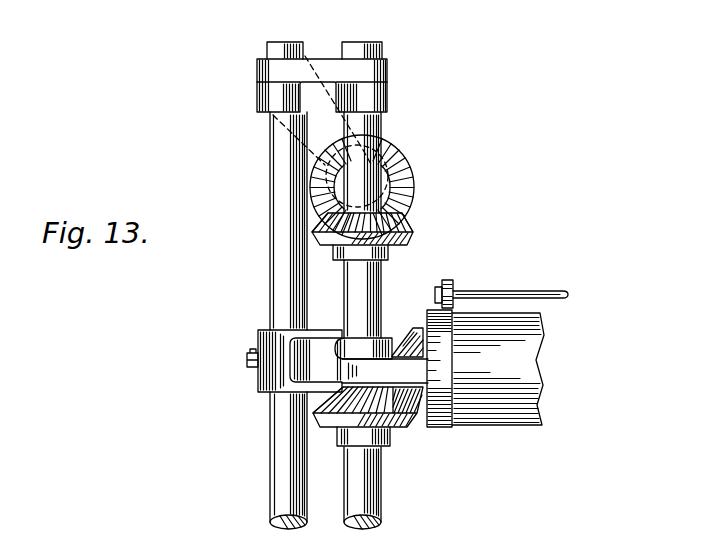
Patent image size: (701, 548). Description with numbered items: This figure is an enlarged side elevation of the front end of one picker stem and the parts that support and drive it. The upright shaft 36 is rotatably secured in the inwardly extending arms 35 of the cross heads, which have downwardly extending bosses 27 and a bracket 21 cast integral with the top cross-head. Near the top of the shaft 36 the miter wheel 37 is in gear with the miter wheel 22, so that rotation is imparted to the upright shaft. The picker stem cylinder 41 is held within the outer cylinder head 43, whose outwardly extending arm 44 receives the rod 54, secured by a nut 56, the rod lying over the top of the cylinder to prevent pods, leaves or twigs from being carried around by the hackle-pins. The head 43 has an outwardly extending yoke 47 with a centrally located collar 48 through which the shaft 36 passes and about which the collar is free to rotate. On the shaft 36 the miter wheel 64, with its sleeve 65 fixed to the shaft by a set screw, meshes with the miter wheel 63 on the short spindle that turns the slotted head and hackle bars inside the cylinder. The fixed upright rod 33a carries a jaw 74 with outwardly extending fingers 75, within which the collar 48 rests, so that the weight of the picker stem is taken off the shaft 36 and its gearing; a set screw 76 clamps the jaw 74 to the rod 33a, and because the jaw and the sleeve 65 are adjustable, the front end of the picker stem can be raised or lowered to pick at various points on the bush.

The bracket 21 is at (303, 55).
The miter wheel 22 is at (413, 178).
The bosses 27 is at (322, 77).
The upright rod 33a is at (257, 520).
The inwardly extending arms 35 is at (358, 69).
The upright shaft 36 is at (370, 150).
The miter wheel 37 is at (404, 226).
The cylinder 41 is at (498, 369).
The outer cylinder head 43 is at (442, 423).
The outwardly extending arm 44 is at (450, 285).
The yoke 47 is at (385, 371).
The collar 48 is at (358, 348).
The rod 54 is at (533, 293).
The nut 56 is at (436, 288).
The miter wheel 63 is at (414, 326).
The miter wheel 64 is at (337, 420).
The sleeve 65 is at (388, 442).
The jaw 74 is at (272, 342).
The fingers 75 is at (318, 335).
The set screw 76 is at (248, 368).